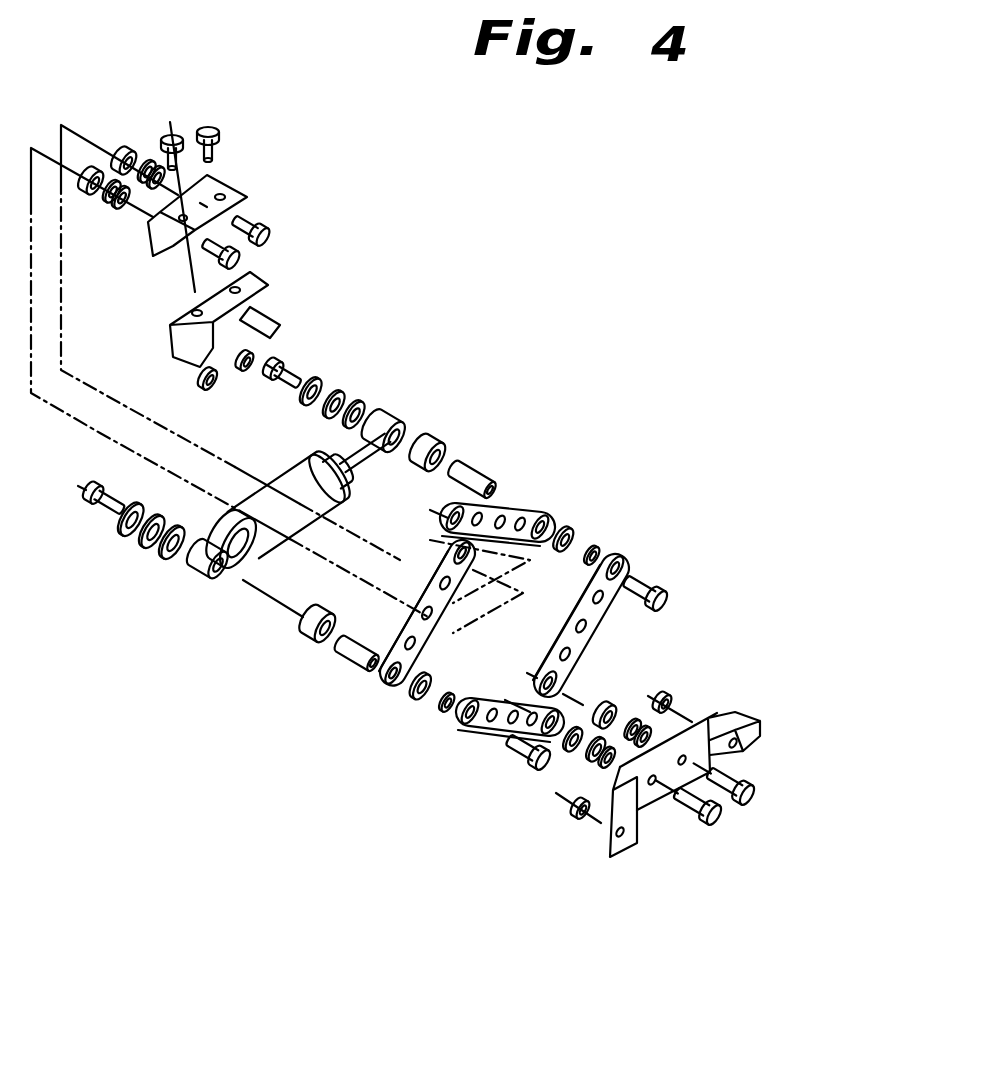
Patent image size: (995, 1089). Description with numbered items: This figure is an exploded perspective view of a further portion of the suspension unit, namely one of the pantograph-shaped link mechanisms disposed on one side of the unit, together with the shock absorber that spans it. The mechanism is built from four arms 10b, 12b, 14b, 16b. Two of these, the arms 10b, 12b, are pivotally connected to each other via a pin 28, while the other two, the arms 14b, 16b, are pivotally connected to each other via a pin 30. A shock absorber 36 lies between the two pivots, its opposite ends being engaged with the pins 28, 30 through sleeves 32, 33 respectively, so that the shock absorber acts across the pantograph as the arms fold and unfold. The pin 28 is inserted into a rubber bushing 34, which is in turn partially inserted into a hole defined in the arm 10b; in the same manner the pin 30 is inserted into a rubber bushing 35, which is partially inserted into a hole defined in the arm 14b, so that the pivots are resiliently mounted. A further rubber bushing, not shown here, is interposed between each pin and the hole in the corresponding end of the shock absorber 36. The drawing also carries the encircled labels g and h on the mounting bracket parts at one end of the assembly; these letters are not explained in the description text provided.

The sleeve 32 is at (437, 440).
The pin 28 is at (474, 466).
The arm 10b is at (520, 497).
The rubber bushing 34 is at (570, 530).
The arm 12b is at (620, 550).
The shock absorber 36 is at (193, 580).
The sleeve 33 is at (300, 634).
The pin 30 is at (343, 661).
The arm 14b is at (383, 683).
The rubber bushing 35 is at (416, 700).
The arm 16b is at (467, 735).
The mounting bracket g is at (757, 748).
The bracket plate h is at (637, 847).